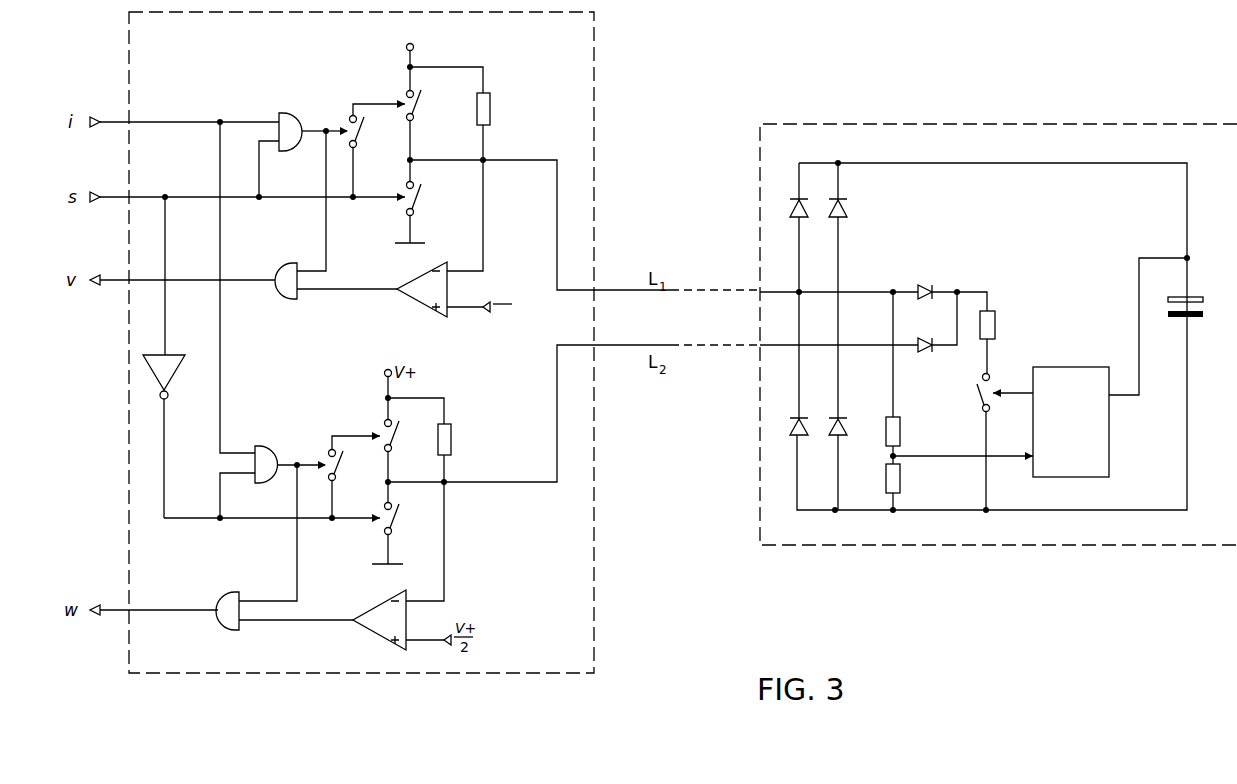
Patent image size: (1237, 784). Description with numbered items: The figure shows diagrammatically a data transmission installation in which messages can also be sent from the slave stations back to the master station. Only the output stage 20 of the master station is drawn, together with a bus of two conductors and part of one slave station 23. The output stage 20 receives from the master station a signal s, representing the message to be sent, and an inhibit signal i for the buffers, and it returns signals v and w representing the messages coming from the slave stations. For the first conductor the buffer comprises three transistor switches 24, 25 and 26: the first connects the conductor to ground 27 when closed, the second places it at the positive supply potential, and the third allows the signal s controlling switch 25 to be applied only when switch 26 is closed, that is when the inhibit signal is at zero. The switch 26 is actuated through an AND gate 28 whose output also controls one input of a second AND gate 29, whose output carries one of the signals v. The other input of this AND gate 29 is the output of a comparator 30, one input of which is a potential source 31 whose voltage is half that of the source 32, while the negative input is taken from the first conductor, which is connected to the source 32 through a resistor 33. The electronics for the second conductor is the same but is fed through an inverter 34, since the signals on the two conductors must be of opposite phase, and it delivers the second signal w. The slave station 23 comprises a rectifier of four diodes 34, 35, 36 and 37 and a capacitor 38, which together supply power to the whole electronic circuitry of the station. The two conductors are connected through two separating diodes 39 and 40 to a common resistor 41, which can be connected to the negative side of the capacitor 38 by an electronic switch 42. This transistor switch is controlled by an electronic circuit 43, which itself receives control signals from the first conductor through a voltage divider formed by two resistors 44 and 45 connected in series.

The output stage 20 is at (594, 585).
The slave station 23 is at (948, 541).
The switch 24 is at (420, 190).
The switch 25 is at (419, 100).
The switch 26 is at (362, 125).
The ground 27 is at (403, 245).
The AND gate 28 is at (293, 112).
The second AND gate 29 is at (284, 297).
The comparator 30 is at (432, 295).
The potential source 31 is at (487, 313).
The source 32 is at (405, 47).
The resistor 33 is at (490, 107).
The inverter / diode 34 is at (170, 372).
The diode 35 is at (848, 207).
The diode 36 is at (790, 427).
The diode 37 is at (845, 425).
The capacitor 38 is at (1190, 298).
The separating diode 39 is at (930, 283).
The separating diode 40 is at (930, 352).
The common resistor 41 is at (997, 323).
The electronic switch 42 is at (992, 388).
The electronic circuit 43 is at (1068, 378).
The resistor 44 is at (900, 434).
The resistor 45 is at (900, 482).